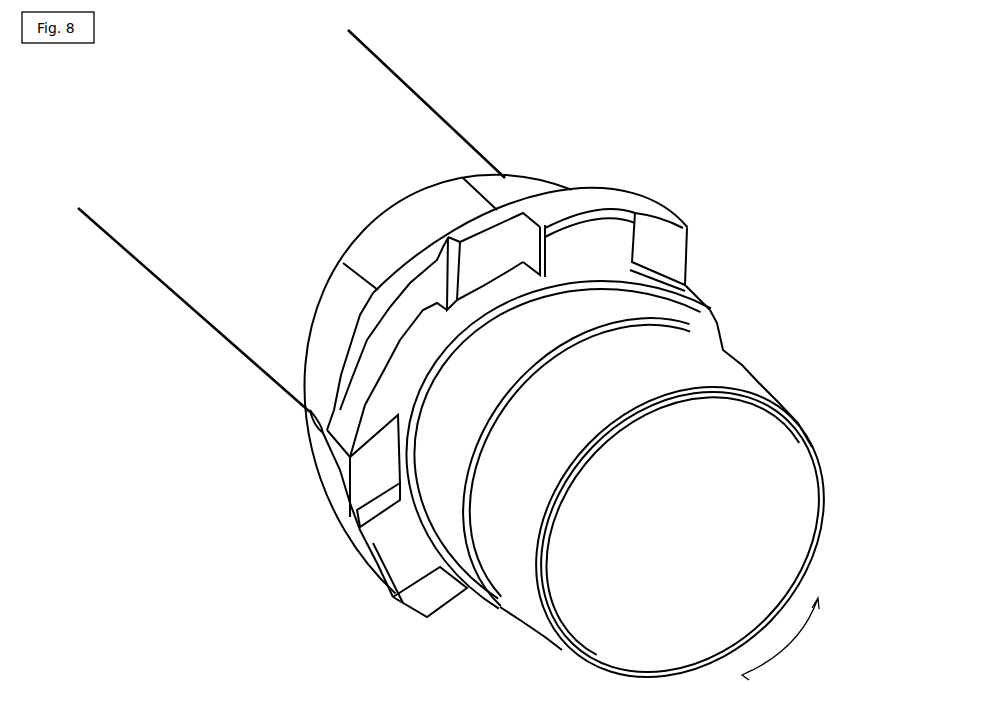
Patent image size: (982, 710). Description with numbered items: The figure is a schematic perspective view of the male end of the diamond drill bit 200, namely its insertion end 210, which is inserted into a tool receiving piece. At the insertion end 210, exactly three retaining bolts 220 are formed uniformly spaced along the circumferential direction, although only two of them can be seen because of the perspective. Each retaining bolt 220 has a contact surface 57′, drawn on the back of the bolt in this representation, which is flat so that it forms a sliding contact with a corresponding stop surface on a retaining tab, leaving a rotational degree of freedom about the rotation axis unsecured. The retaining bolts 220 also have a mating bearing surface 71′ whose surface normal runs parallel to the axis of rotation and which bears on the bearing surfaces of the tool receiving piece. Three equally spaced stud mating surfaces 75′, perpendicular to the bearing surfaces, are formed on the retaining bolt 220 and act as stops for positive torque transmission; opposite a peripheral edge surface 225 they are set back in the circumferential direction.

The diamond drill bit 200 is at (124, 328).
The insertion end 210 is at (842, 358).
The retaining bolt 220 is at (687, 183).
The peripheral edge surface 225 is at (370, 500).
The contact surface 57′ is at (584, 170).
The mating bearing surface 71′ is at (598, 242).
The stud mating surface 75′ is at (545, 245).